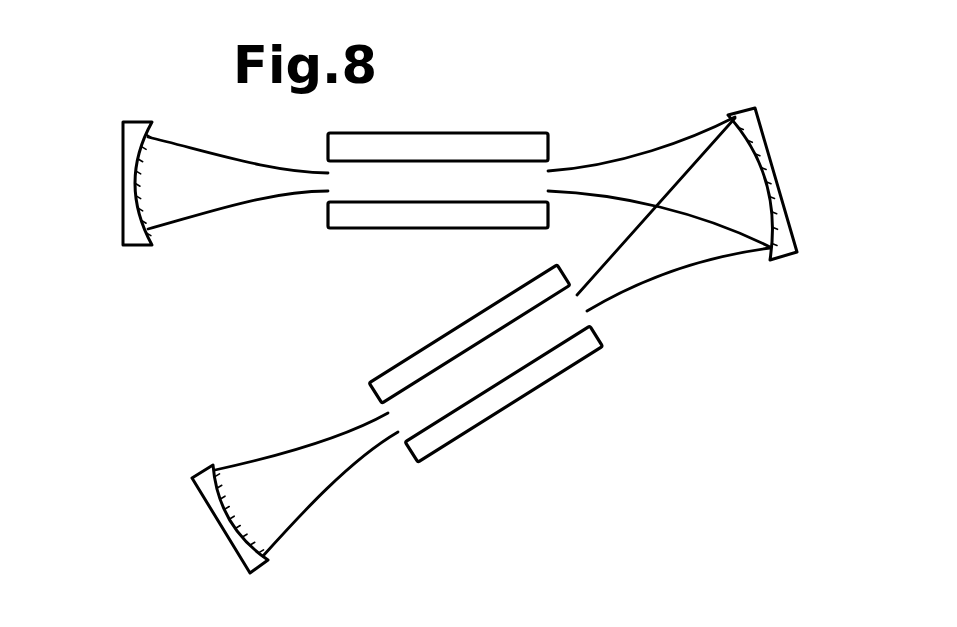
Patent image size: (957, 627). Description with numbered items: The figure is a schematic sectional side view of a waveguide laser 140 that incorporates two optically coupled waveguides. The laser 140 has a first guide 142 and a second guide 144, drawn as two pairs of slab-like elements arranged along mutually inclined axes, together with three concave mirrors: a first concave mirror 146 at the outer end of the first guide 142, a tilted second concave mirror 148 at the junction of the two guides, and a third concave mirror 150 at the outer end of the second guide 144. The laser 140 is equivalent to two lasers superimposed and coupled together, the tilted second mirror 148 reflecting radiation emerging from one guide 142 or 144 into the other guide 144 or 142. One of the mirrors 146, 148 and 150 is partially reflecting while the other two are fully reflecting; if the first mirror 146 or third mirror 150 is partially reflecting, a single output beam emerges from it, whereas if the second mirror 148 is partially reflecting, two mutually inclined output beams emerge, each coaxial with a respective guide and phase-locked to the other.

The waveguide laser 140 is at (168, 314).
The first guide 142 is at (528, 138).
The second guide 144 is at (530, 393).
The first concave mirror 146 is at (130, 178).
The second concave mirror 148 is at (797, 245).
The third concave mirror 150 is at (207, 503).